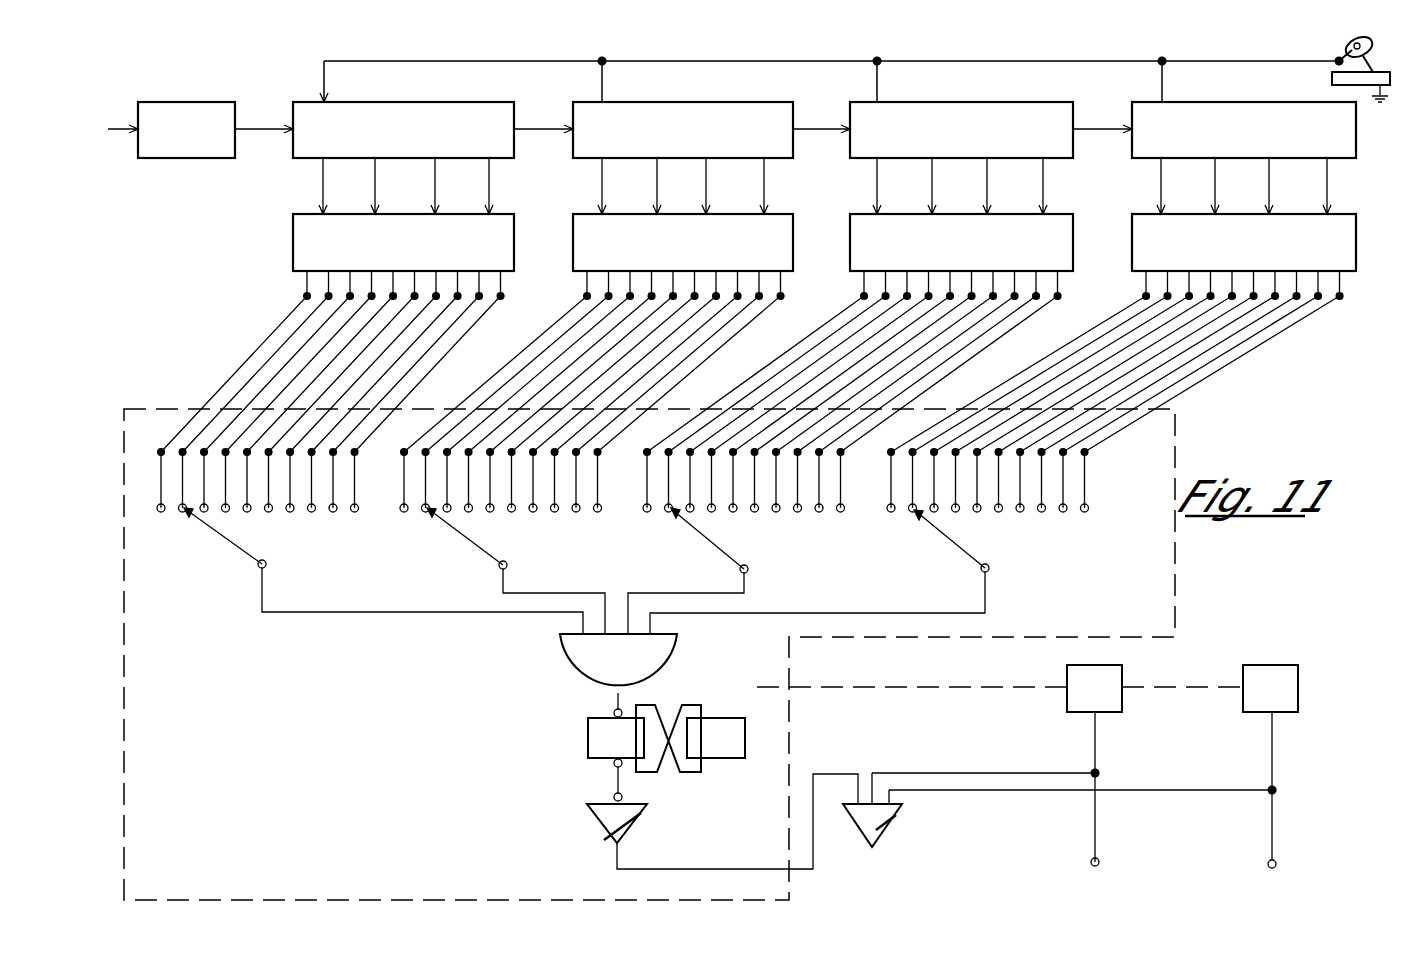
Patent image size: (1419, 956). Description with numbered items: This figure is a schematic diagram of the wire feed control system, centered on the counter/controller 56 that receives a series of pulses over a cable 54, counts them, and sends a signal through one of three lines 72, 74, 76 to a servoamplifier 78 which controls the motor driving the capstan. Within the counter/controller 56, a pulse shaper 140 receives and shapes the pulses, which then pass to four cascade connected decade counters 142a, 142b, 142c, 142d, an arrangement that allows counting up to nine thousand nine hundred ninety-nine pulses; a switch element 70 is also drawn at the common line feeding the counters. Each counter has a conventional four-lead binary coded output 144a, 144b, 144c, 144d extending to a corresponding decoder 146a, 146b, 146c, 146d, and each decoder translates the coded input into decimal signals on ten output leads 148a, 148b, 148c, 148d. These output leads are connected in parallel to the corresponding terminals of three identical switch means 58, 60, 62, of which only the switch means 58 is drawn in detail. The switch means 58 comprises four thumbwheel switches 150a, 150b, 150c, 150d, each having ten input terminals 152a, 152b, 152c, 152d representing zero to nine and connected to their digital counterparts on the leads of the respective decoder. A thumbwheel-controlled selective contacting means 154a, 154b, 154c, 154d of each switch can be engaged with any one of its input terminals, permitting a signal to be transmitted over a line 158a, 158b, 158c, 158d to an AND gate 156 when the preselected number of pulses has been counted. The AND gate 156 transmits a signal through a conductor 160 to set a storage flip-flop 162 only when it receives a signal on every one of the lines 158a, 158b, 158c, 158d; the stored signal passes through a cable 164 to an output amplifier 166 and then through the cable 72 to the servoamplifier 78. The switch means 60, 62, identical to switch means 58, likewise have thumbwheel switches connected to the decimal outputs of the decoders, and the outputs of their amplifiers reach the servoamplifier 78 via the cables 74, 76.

The cable 54 is at (120, 128).
The counter/controller 56 is at (205, 219).
The switch means 58 is at (1190, 437).
The switch means 60 is at (1112, 672).
The switch means 62 is at (1283, 673).
The clock switch 70 is at (1293, 60).
The cable 72 is at (742, 869).
The cable 74 is at (983, 773).
The cable 76 is at (1030, 790).
The servoamplifier 78 is at (888, 827).
The pulse shaper 140 is at (204, 106).
The decade counter 142a is at (489, 112).
The decade counter 142b is at (752, 112).
The decade counter 142c is at (1060, 112).
The decade counter 142d is at (1254, 112).
The binary coded output 144a is at (323, 183).
The binary coded output 144b is at (764, 186).
The binary coded output 144c is at (1043, 186).
The binary coded output 144d is at (1327, 188).
The decoder 146a is at (403, 242).
The decoder 146b is at (683, 242).
The decoder 146c is at (961, 242).
The decoder 146d is at (1244, 242).
The output leads 148a is at (307, 284).
The output leads 148b is at (780, 286).
The output leads 148c is at (1058, 286).
The output leads 148d is at (1340, 286).
The thumbwheel switch 150a is at (157, 524).
The thumbwheel switch 150b is at (548, 518).
The thumbwheel switch 150c is at (753, 517).
The thumbwheel switch 150d is at (1014, 519).
The input terminals 152a is at (292, 485).
The input terminals 152b is at (425, 490).
The input terminals 152c is at (818, 492).
The input terminals 152d is at (1086, 490).
The selective contacting means 154a is at (225, 543).
The selective contacting means 154b is at (461, 537).
The selective contacting means 154c is at (703, 538).
The selective contacting means 154d is at (958, 545).
The AND gate 156 is at (618, 659).
The line 158a is at (330, 613).
The line 158b is at (557, 593).
The line 158c is at (690, 593).
The line 158d is at (885, 612).
The conductor 160 is at (612, 706).
The storage flip-flop 162 is at (588, 736).
The cable 164 is at (622, 790).
The output amplifier 166 is at (638, 820).